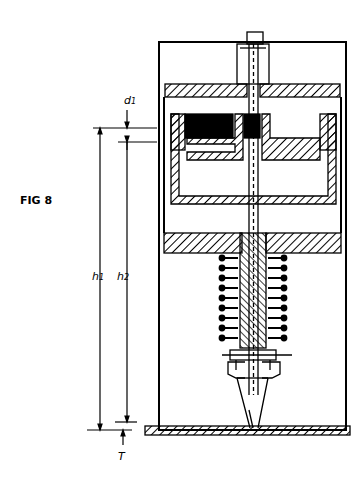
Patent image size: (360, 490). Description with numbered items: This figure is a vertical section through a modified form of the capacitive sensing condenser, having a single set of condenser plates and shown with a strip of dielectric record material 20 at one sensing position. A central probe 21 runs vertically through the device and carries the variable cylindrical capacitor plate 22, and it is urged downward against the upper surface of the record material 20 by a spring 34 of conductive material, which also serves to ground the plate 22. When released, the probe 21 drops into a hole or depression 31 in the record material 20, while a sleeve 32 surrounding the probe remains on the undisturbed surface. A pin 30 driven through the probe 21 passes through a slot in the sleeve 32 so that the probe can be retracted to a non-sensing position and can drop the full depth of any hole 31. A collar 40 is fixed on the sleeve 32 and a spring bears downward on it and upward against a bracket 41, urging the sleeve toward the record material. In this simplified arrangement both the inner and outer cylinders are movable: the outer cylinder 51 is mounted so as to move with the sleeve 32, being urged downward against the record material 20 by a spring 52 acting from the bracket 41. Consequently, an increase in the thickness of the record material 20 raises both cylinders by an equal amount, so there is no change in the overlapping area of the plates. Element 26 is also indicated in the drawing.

The record material 20 is at (192, 426).
The probe 21 is at (248, 73).
The variable cylindrical capacitor plate 22 is at (224, 155).
The bracket 26 is at (279, 372).
The pin 30 is at (230, 355).
The hole or depression 31 is at (263, 417).
The sleeve 32 is at (244, 406).
The spring 34 is at (262, 40).
The collar 40 is at (278, 338).
The bracket 41 is at (202, 254).
The outer cylinder 51 is at (177, 160).
The spring 52 is at (238, 316).